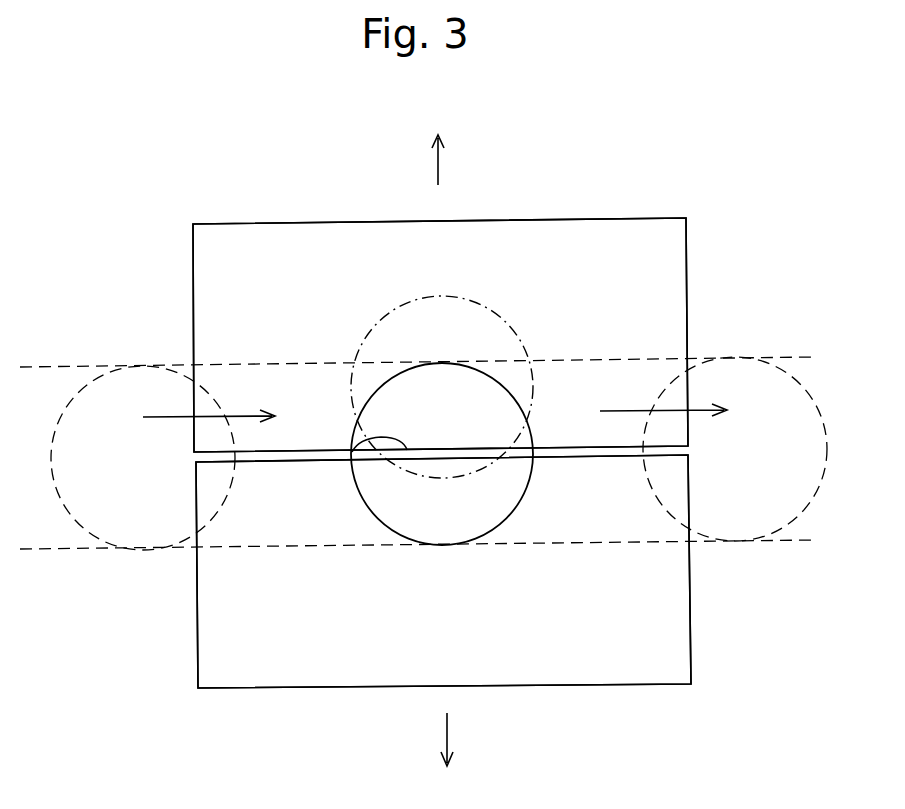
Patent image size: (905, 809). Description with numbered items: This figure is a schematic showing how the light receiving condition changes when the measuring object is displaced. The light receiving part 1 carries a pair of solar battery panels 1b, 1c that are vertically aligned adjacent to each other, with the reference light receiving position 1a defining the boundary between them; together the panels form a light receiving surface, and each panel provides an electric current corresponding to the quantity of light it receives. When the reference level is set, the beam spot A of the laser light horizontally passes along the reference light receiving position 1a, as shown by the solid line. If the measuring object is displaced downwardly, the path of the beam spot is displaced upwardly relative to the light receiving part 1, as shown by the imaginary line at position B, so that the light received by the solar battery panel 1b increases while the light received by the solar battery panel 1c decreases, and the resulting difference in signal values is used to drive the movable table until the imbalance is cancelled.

The light receiving part 1 is at (167, 316).
The reference light receiving position 1a is at (352, 452).
The solar battery panel 1b is at (686, 285).
The solar battery panel 1c is at (690, 607).
The beam spot A is at (514, 513).
The phantom roller position B is at (521, 340).